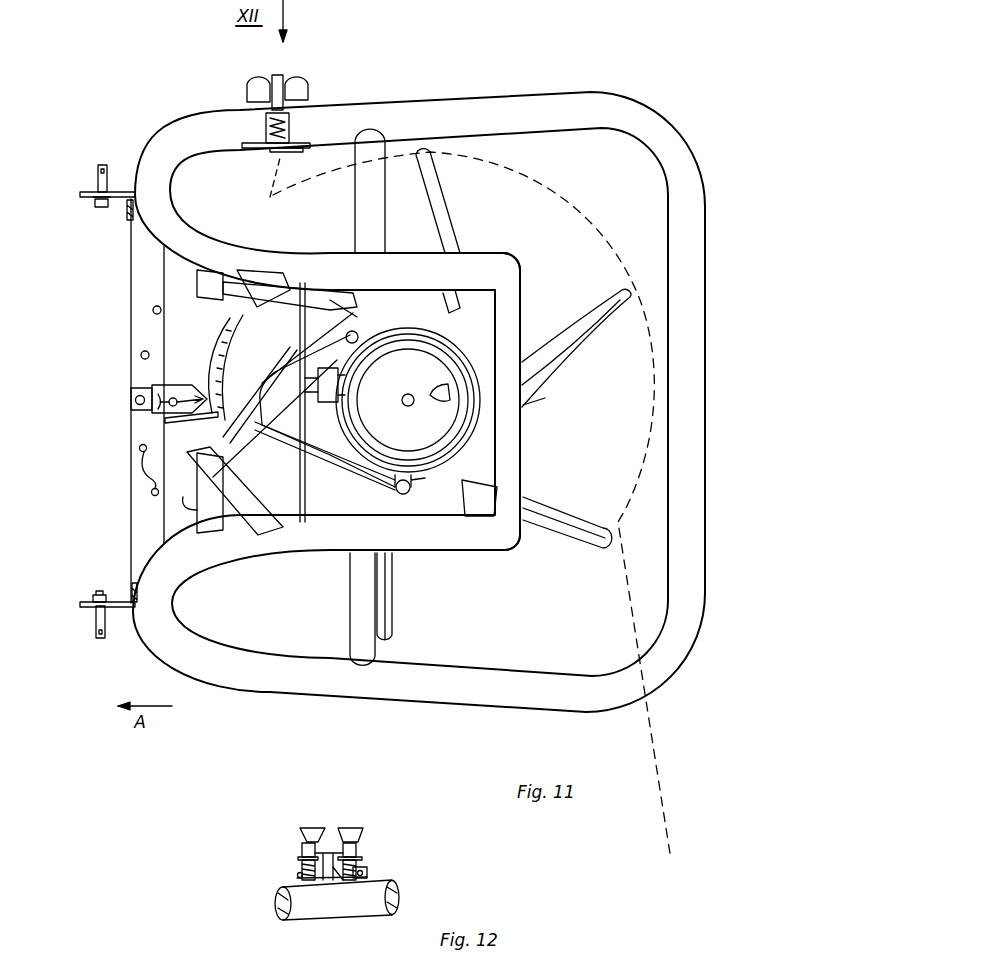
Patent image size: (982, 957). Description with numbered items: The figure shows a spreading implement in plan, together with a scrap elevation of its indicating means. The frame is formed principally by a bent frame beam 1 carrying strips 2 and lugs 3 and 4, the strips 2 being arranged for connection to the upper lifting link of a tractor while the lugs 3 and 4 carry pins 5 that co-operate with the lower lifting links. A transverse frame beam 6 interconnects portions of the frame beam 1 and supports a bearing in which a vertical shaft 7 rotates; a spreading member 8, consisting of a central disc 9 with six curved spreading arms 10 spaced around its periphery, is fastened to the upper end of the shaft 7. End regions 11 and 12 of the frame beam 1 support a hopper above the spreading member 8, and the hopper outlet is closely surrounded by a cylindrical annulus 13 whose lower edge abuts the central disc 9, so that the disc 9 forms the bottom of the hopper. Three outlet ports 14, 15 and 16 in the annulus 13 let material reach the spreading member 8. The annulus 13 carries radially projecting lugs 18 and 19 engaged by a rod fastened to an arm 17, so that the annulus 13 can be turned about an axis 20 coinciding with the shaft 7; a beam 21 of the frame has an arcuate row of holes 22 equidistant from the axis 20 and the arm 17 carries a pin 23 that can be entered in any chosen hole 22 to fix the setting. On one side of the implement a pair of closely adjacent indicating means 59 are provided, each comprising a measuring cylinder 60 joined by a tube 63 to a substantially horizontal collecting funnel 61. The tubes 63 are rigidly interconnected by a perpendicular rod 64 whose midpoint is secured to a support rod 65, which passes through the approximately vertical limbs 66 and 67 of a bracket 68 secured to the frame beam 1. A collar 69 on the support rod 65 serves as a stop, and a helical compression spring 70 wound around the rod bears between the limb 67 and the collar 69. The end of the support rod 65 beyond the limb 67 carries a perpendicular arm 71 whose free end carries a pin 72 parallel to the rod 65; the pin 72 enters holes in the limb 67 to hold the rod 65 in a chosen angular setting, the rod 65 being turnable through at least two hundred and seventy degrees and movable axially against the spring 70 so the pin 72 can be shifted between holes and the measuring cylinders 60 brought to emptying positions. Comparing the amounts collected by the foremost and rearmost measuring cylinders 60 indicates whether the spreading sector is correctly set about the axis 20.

In FIG. 11, the frame beam 1 is at (537, 96).
In FIG. 11, the strips 2 is at (270, 275).
In FIG. 11, the lug 3 is at (95, 204).
In FIG. 11, the lug 4 is at (95, 596).
In FIG. 11, the pins 5 is at (103, 164).
In FIG. 11, the transverse frame beam 6 is at (358, 200).
In FIG. 11, the vertical shaft 7 is at (414, 401).
In FIG. 11, the spreading member 8 is at (566, 326).
In FIG. 11, the central disc 9 is at (540, 412).
In FIG. 11, the spreading arms 10 is at (445, 232).
In FIG. 11, the end region 11 is at (480, 265).
In FIG. 11, the end region 12 is at (470, 549).
In FIG. 11, the cylindrical annulus 13 is at (448, 346).
In FIG. 11, the outlet port 14 is at (360, 370).
In FIG. 11, the outlet port 15 is at (348, 396).
In FIG. 11, the outlet port 16 is at (363, 447).
In FIG. 11, the arm 17 is at (243, 412).
In FIG. 11, the lug 18 is at (355, 333).
In FIG. 11, the lug 19 is at (412, 488).
In FIG. 11, the axis 20 is at (411, 394).
In FIG. 11, the beam 21 is at (140, 270).
In FIG. 11, the holes 22 is at (140, 452).
In FIG. 11, the pin 23 is at (133, 388).
In FIG. 11, the indicating means 59 is at (250, 77).
In FIG. 12, the indicating means 59 is at (305, 828).
In FIG. 12, the measuring cylinder 60 is at (300, 864).
In FIG. 11, the collecting funnel 61 is at (248, 91).
In FIG. 12, the collecting funnel 61 is at (318, 829).
In FIG. 12, the tube 63 is at (300, 848).
In FIG. 11, the rod 64 is at (280, 74).
In FIG. 12, the rod 64 is at (333, 852).
In FIG. 11, the support rod 65 is at (306, 94).
In FIG. 12, the support rod 65 is at (338, 874).
In FIG. 11, the limb 66 is at (243, 112).
In FIG. 12, the limb 66 is at (328, 881).
In FIG. 11, the limb 67 is at (245, 153).
In FIG. 12, the limb 67 is at (297, 876).
In FIG. 11, the bracket 68 is at (266, 157).
In FIG. 11, the collar 69 is at (290, 121).
In FIG. 11, the helical compression spring 70 is at (262, 137).
In FIG. 11, the arm 71 is at (286, 153).
In FIG. 11, the pin 72 is at (302, 150).
In FIG. 12, the pin 72 is at (280, 888).